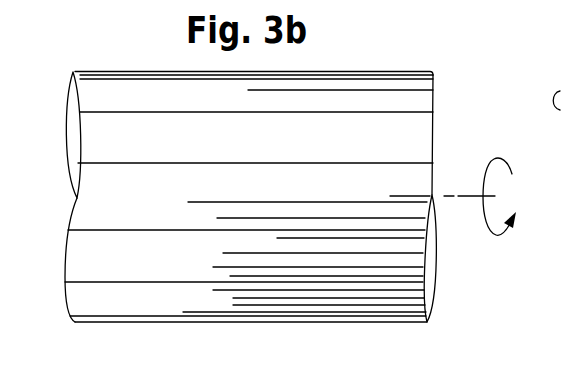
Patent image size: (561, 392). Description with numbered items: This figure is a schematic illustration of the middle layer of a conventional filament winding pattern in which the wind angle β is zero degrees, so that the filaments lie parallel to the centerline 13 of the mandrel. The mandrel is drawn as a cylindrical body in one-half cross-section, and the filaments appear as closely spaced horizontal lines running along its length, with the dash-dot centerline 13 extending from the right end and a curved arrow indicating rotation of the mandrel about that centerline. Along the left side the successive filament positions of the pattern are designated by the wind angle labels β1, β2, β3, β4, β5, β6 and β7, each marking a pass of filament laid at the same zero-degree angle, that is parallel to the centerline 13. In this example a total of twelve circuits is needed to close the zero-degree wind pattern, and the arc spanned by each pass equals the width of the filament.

The angular band β 1 is at (88, 66).
The angular band β 2 is at (226, 92).
The angular band β 3 is at (226, 145).
The angular band β 4 is at (223, 203).
The angular band β 5 is at (222, 259).
The angular band β 6 is at (223, 296).
The angular band β 7 is at (223, 342).
The centerline 13 is at (459, 192).